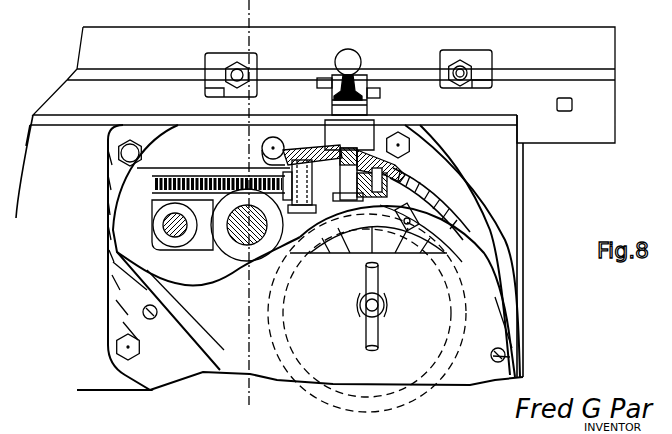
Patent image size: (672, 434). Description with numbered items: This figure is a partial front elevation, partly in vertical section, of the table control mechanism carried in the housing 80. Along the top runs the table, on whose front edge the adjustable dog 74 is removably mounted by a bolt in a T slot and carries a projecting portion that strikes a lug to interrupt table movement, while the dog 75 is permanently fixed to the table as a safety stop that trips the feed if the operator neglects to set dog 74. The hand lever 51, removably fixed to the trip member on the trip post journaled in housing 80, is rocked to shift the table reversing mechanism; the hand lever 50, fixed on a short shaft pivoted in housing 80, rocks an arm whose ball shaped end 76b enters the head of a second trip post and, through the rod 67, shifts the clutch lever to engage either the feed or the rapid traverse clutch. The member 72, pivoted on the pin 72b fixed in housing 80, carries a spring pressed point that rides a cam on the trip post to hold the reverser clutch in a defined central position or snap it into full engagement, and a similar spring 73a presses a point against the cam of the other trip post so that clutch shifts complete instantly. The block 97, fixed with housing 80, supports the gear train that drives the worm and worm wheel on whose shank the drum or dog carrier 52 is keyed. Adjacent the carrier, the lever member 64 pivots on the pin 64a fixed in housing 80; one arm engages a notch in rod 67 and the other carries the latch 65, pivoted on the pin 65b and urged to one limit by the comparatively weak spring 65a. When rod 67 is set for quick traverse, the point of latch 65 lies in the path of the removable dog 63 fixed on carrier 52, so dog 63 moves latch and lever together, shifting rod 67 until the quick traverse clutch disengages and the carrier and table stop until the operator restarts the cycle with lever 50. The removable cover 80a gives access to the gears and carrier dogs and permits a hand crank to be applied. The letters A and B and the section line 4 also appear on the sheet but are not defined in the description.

The section line 4 is at (231, 405).
The ball shaped end 76b is at (322, 72).
The beam B is at (63, 97).
The arm A is at (30, 166).
The dog 74 is at (447, 52).
The dog 75 is at (563, 97).
The hand lever 51 is at (349, 50).
The rod 67 is at (327, 148).
The housing 80 is at (137, 303).
The member 72 is at (170, 250).
The cover 80a is at (147, 280).
The block 97 is at (152, 202).
The spring 73a is at (196, 177).
The pin 72b is at (303, 155).
The hand lever 50 is at (272, 137).
The pin 64a is at (351, 158).
The pin 65b is at (392, 172).
The spring 65a is at (398, 185).
The lever member 64 is at (400, 173).
The latch member 65 is at (400, 200).
The dog 63 is at (415, 210).
The carrier 52 is at (425, 238).